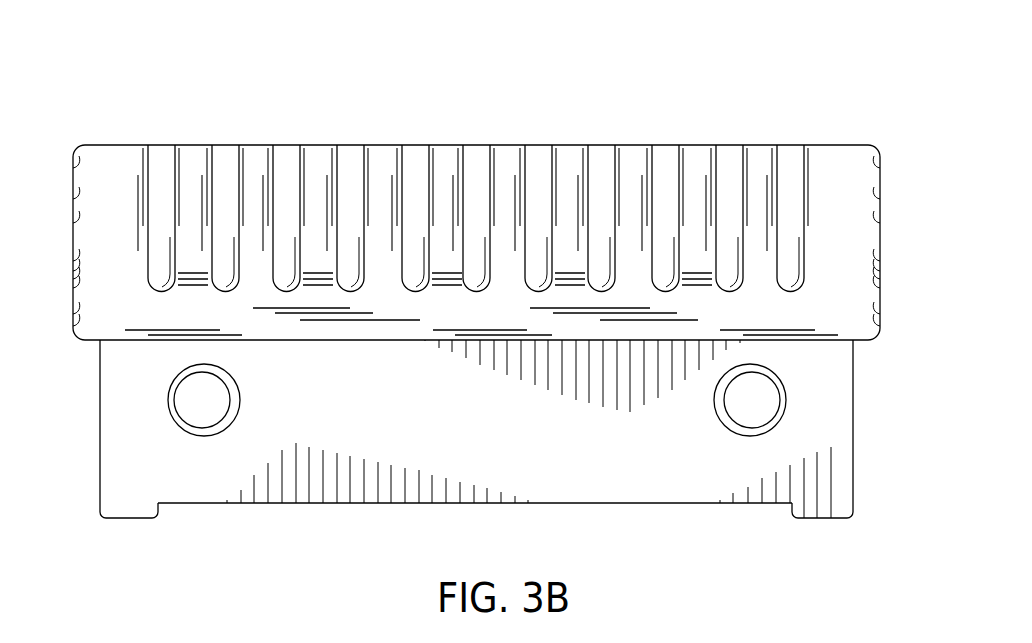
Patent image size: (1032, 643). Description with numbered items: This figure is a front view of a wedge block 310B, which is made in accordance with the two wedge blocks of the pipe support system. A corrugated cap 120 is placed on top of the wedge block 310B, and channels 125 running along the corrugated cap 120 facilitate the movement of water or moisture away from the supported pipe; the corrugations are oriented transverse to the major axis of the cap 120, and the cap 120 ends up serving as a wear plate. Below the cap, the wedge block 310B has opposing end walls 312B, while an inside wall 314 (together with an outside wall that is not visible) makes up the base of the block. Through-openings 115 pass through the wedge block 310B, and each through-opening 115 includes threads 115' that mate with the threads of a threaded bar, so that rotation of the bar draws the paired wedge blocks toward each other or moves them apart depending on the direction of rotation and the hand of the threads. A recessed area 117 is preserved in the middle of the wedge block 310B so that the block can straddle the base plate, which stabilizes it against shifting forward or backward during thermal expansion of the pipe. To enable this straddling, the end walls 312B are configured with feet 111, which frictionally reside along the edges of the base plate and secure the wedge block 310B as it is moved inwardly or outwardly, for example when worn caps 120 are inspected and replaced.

The wedge block 310B is at (800, 61).
The corrugated cap 120 is at (161, 139).
The channels 125 is at (413, 148).
The inside wall 314 is at (490, 428).
The end walls 312B is at (104, 455).
The through-opening 115 is at (483, 400).
The threads 115' is at (479, 385).
The feet 111 is at (104, 502).
The recessed area 117 is at (698, 505).